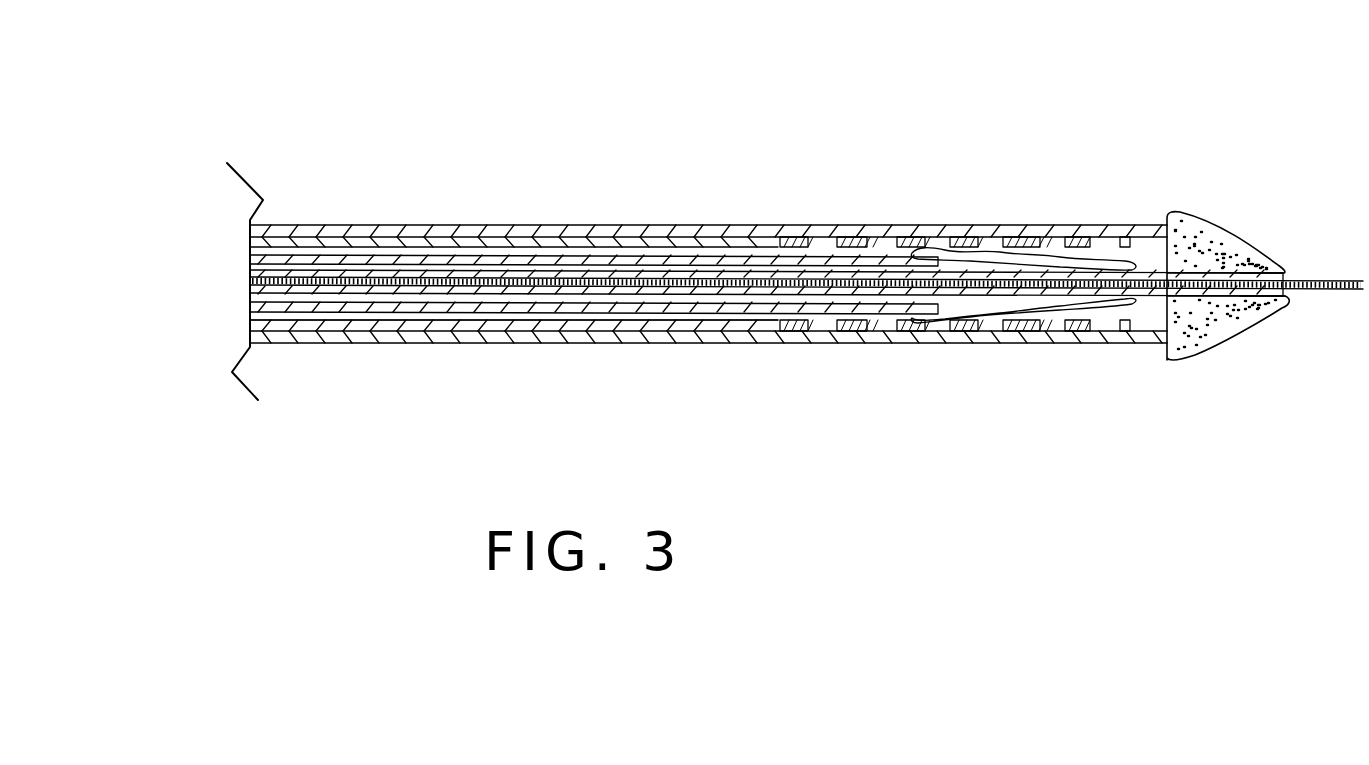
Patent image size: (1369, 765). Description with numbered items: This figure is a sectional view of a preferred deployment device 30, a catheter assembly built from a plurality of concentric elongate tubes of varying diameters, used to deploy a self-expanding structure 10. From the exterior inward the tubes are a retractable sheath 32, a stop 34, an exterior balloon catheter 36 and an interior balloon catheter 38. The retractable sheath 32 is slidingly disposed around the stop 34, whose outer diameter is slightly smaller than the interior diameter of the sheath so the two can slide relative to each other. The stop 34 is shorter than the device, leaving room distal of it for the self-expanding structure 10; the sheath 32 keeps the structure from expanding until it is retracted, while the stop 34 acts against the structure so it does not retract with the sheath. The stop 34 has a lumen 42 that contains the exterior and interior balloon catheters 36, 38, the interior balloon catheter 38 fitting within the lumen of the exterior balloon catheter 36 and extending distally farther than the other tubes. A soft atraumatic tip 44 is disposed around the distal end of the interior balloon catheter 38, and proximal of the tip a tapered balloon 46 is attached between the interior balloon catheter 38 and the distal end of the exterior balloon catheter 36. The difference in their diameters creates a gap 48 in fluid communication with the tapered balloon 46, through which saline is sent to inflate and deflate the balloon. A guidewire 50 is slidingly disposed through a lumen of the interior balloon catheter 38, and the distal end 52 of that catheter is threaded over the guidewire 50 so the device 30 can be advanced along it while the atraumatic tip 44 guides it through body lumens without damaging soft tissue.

The deployment device 30 is at (442, 132).
The retractable sheath 32 is at (250, 228).
The stop 34 is at (250, 240).
The exterior balloon catheter 36 is at (250, 262).
The interior balloon catheter 38 is at (250, 270).
The gap 48 is at (250, 296).
The lumen 42 is at (250, 317).
The self-expanding structure 10 is at (864, 244).
The tapered balloon 46 is at (1013, 322).
The atraumatic tip 44 is at (1199, 363).
The guidewire 50 is at (1318, 291).
The distal end 52 is at (1283, 272).